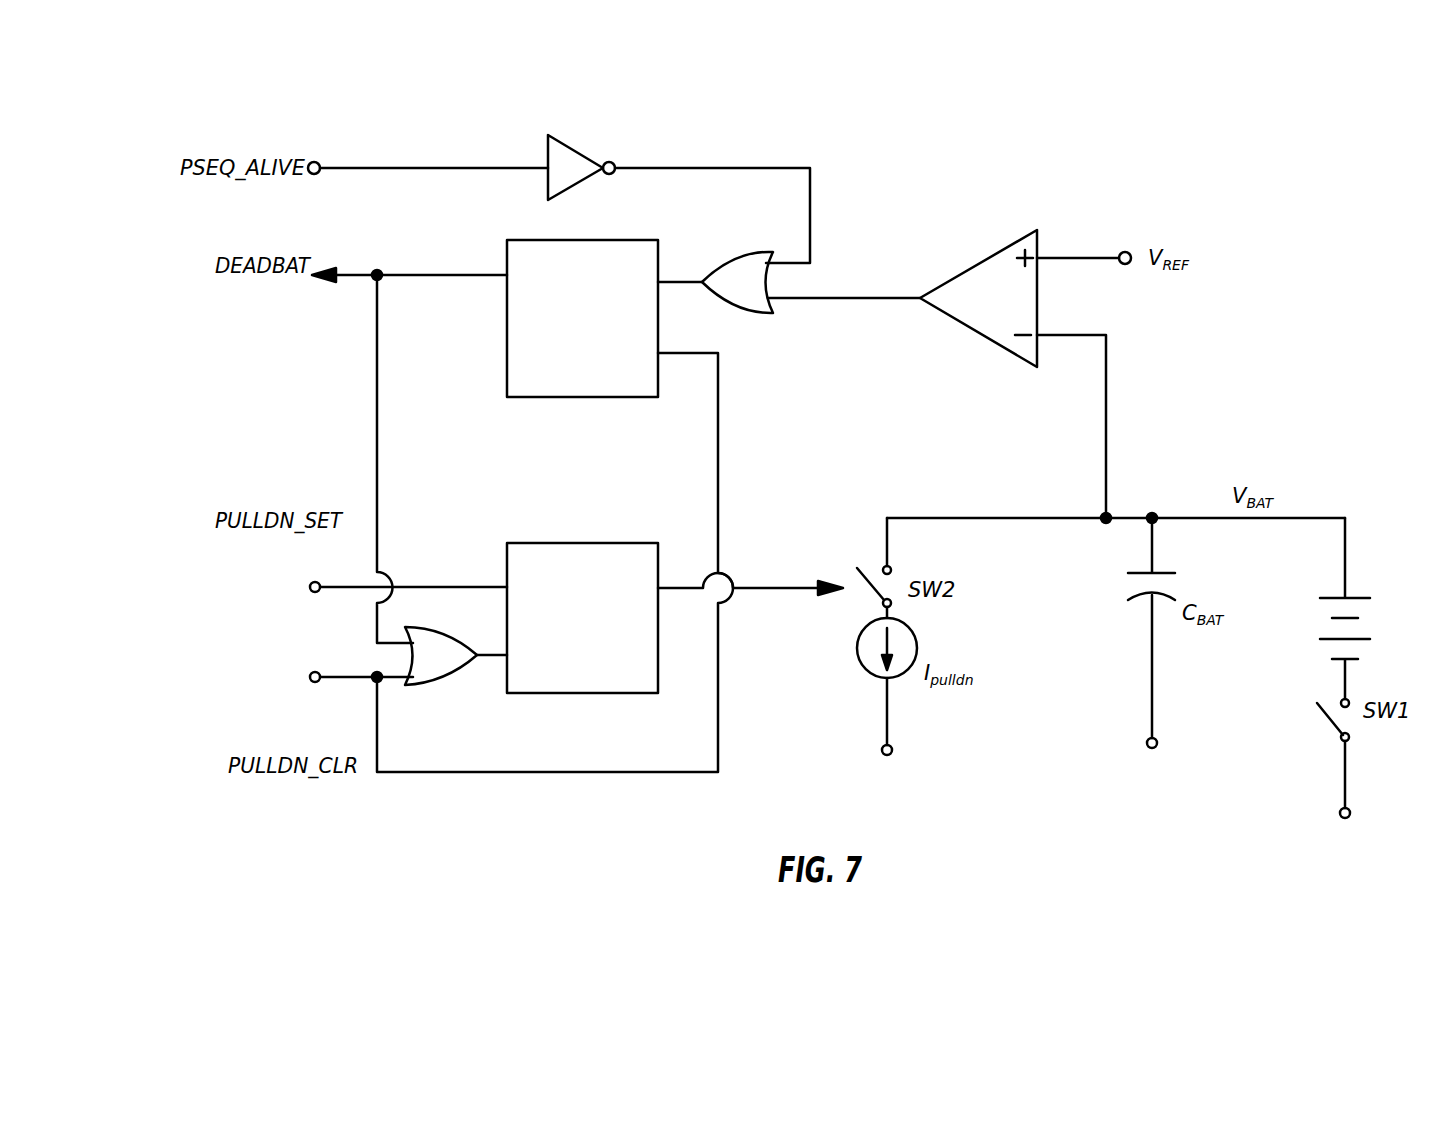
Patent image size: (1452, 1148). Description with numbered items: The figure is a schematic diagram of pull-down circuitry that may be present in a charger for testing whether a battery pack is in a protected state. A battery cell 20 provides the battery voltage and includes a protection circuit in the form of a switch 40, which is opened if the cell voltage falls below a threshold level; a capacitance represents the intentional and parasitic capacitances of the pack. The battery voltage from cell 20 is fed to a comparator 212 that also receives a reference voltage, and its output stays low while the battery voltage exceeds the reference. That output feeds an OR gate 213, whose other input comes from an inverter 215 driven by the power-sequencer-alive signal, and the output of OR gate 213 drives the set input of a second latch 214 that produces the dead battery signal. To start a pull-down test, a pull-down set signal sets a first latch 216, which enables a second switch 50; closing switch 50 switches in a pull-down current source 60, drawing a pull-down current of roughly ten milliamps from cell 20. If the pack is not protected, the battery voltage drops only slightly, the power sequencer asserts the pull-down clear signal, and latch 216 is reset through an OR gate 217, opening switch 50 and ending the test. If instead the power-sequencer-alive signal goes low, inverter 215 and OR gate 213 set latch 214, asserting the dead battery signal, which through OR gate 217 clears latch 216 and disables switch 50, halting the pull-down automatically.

The inverter 215 is at (575, 147).
The comparator 212 is at (983, 258).
The logic gate 213 is at (750, 313).
The latch 214 is at (552, 397).
The latch 216 is at (578, 543).
The OR gate 217 is at (430, 683).
The second switch 50 is at (892, 567).
The pull-down current source 60 is at (912, 633).
The battery cell 20 is at (1358, 596).
The switch 40 is at (1330, 723).